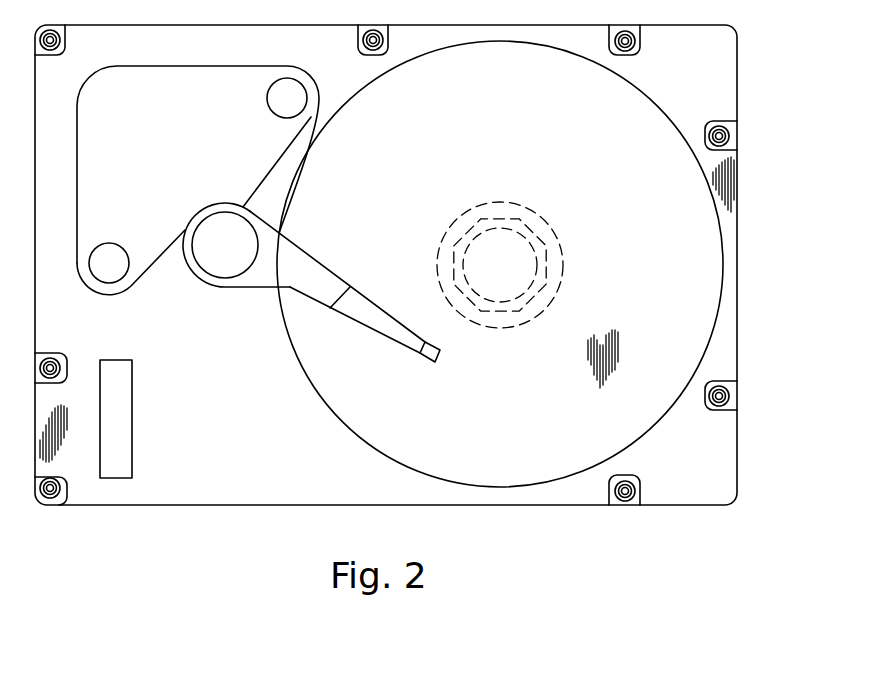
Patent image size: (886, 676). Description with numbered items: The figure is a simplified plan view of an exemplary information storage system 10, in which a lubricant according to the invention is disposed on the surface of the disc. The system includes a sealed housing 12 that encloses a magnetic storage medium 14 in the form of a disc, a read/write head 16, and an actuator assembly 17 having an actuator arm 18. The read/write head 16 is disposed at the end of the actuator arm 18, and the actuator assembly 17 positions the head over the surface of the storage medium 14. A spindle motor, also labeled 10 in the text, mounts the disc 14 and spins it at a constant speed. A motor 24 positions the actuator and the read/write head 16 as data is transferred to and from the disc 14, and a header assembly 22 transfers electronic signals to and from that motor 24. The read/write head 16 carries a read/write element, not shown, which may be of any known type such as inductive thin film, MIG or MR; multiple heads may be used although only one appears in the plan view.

The information storage system 10 is at (520, 277).
The sealed housing 12 is at (758, 190).
The magnetic storage medium 14 is at (765, 452).
The read/write head 16 is at (430, 350).
The actuator assembly 17 is at (351, 265).
The actuator arm 18 is at (353, 297).
The header assembly 22 is at (133, 458).
The motor 24 is at (181, 148).